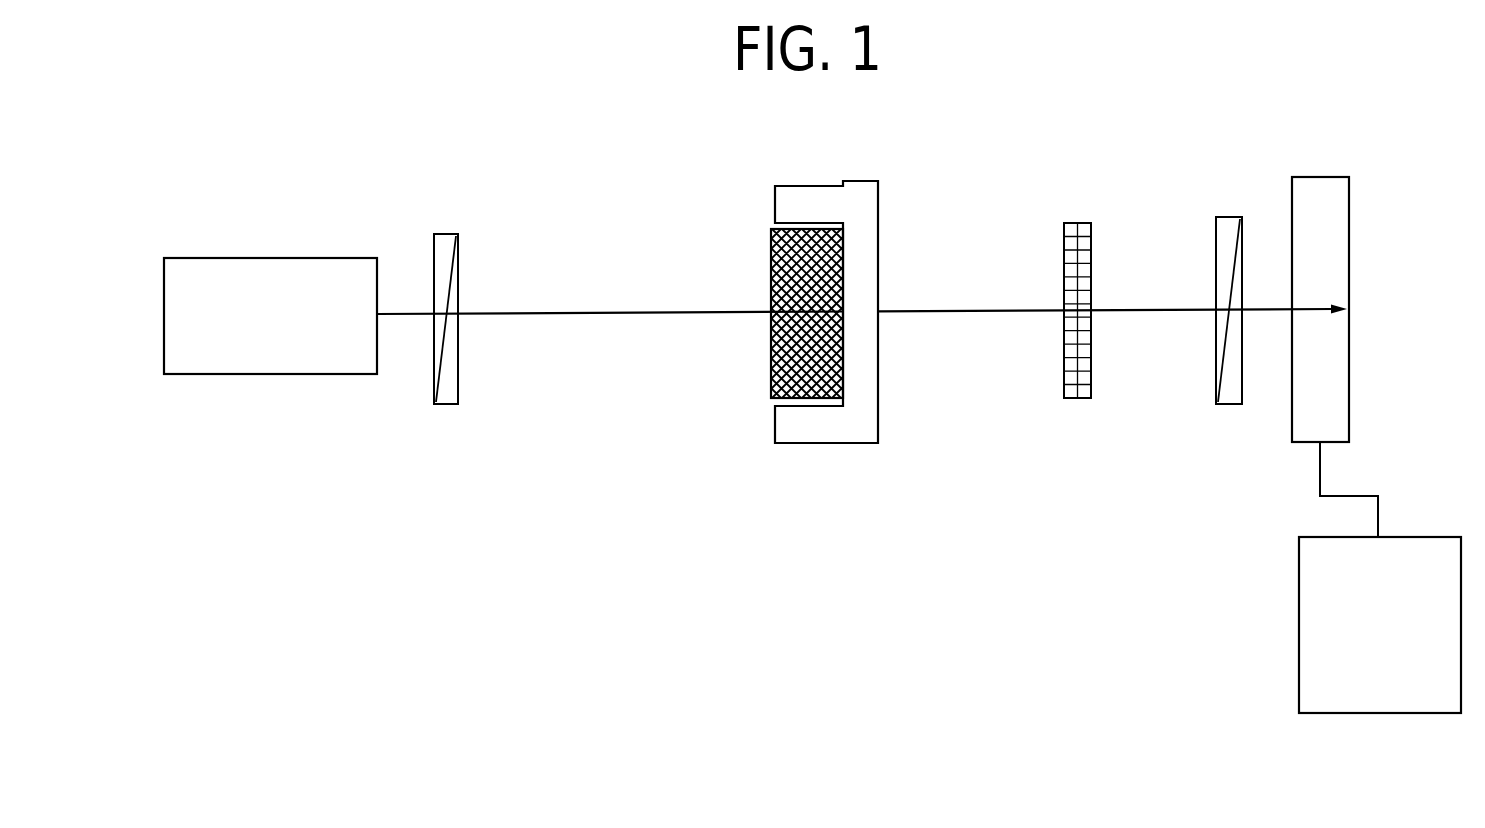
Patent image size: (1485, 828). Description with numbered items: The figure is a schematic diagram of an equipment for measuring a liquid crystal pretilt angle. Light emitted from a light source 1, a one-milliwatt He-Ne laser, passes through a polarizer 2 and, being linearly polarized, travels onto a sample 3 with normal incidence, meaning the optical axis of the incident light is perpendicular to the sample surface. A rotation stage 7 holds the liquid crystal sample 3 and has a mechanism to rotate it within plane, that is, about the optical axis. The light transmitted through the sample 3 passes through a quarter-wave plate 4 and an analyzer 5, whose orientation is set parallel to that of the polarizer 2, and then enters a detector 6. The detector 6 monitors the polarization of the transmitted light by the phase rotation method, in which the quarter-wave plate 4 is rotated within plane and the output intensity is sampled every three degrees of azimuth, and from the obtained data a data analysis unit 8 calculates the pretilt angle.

The light source 1 is at (272, 258).
The polarizer 2 is at (446, 234).
The sample 3 is at (808, 243).
The ¼-wave plate 4 is at (1077, 224).
The analyzer 5 is at (1230, 217).
The detector 6 is at (1318, 177).
The rotation stage 7 is at (868, 443).
The data analysis unit 8 is at (1378, 713).